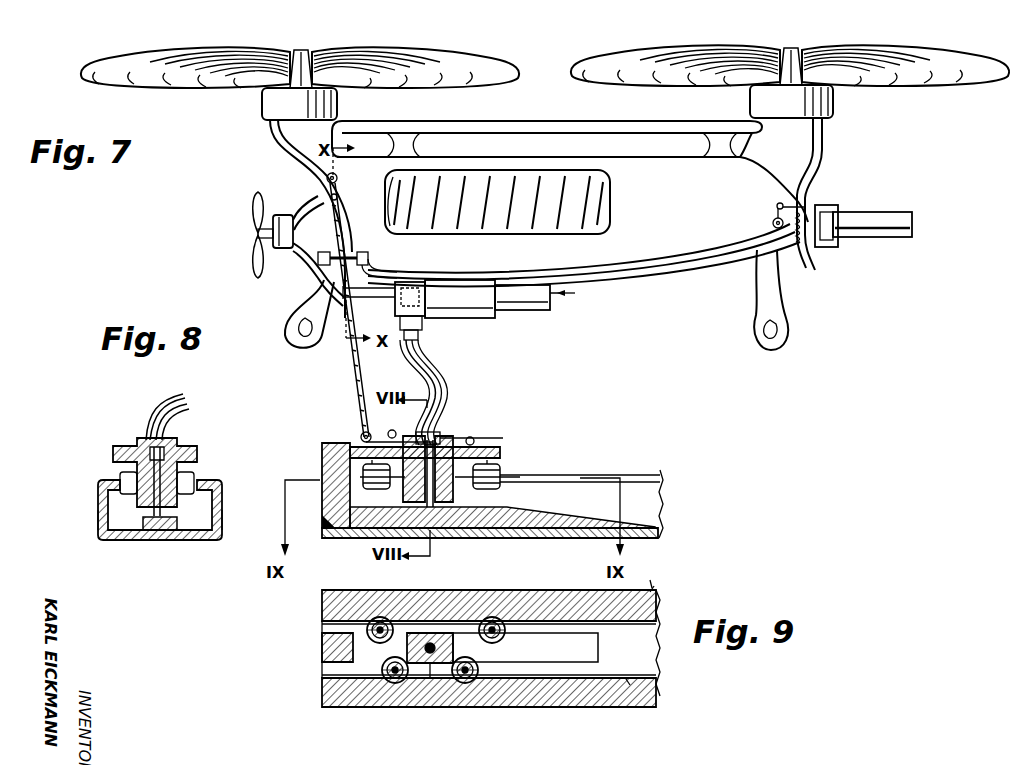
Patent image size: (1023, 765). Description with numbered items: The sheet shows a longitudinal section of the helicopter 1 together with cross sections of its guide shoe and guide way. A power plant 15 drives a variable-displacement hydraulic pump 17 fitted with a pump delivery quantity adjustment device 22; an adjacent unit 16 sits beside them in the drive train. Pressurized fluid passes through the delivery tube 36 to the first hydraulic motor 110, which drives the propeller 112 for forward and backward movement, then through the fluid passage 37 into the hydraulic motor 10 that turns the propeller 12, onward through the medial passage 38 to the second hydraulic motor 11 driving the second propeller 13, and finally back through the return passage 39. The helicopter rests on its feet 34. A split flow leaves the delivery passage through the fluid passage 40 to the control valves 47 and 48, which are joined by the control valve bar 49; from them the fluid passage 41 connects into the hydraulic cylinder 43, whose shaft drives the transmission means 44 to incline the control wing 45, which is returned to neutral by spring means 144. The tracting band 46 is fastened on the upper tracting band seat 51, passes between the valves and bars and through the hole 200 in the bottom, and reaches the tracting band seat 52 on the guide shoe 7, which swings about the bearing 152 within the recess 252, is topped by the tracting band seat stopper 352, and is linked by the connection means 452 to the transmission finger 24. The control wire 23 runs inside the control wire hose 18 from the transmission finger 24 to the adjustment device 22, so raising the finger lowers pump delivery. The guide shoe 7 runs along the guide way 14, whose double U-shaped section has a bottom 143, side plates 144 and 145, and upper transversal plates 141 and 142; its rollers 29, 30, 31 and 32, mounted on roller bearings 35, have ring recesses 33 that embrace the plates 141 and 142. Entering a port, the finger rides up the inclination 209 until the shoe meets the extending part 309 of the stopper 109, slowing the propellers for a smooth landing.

In FIG. 7, the helicopter 1 is at (648, 190).
In FIG. 7, the guide shoe 7 is at (480, 447).
In FIG. 8, the guide shoe 7 is at (197, 452).
In FIG. 9, the guide shoe 7 is at (440, 630).
In FIG. 7, the hydraulic motor 10 is at (264, 103).
In FIG. 7, the second hydraulic motor 11 is at (758, 101).
In FIG. 7, the propeller 12 is at (445, 73).
In FIG. 7, the second propeller 13 is at (630, 78).
In FIG. 7, the guide way 14 is at (648, 470).
In FIG. 8, the guide way 14 is at (222, 500).
In FIG. 9, the guide way 14 is at (328, 606).
In FIG. 7, the power plant 15 is at (480, 292).
In FIG. 7, the pump 16 is at (537, 290).
In FIG. 7, the hydraulic pump 17 is at (410, 293).
In FIG. 7, the control wire hose 18 is at (450, 392).
In FIG. 8, the control wire hose 18 is at (149, 418).
In FIG. 7, the pump delivery quantity adjustment device 22 is at (420, 340).
In FIG. 7, the control wire 23 is at (446, 375).
In FIG. 8, the control wire 23 is at (170, 398).
In FIG. 7, the transmission finger 24 is at (436, 500).
In FIG. 8, the transmission finger 24 is at (150, 497).
In FIG. 9, the transmission finger 24 is at (432, 680).
In FIG. 9, the guide shoe roller 29 is at (370, 620).
In FIG. 9, the guide shoe roller 30 is at (503, 637).
In FIG. 9, the guide shoe roller 31 is at (388, 680).
In FIG. 9, the guide shoe roller 32 is at (475, 680).
In FIG. 7, the ring recess 33 is at (358, 476).
In FIG. 9, the ring recess 33 is at (368, 630).
In FIG. 7, the helicopter feet 34 is at (284, 338).
In FIG. 7, the guide shoe roller bearing 35 is at (492, 466).
In FIG. 9, the guide shoe roller bearing 35 is at (383, 625).
In FIG. 7, the delivery tube 36 is at (316, 287).
In FIG. 7, the fluid passage 37 is at (270, 145).
In FIG. 7, the medial passage 38 is at (545, 121).
In FIG. 7, the return passage 39 is at (803, 176).
In FIG. 7, the fluid passage 40 is at (298, 268).
In FIG. 7, the fluid passage 41 is at (612, 278).
In FIG. 7, the hydraulic cylinder 43 is at (772, 222).
In FIG. 7, the transmission means 44 is at (826, 204).
In FIG. 7, the control wing 45 is at (900, 212).
In FIG. 7, the tracting band 46 is at (358, 361).
In FIG. 7, the control valve 47 is at (321, 254).
In FIG. 7, the control valve 48 is at (369, 258).
In FIG. 7, the control valve bar 49 is at (345, 258).
In FIG. 7, the tracting band seat 51 is at (338, 182).
In FIG. 7, the tracting band seat 52 is at (361, 434).
In FIG. 7, the stopper 109 is at (330, 530).
In FIG. 9, the stopper 109 is at (322, 646).
In FIG. 7, the first hydraulic motor 110 is at (281, 214).
In FIG. 7, the propeller 112 is at (254, 213).
In FIG. 8, the guide way transversal plate 141 is at (108, 480).
In FIG. 9, the guide way transversal plate 141 is at (645, 700).
In FIG. 7, the guide way transversal plate 142 is at (667, 575).
In FIG. 8, the guide way transversal plate 142 is at (216, 478).
In FIG. 9, the guide way transversal plate 142 is at (662, 586).
In FIG. 8, the bottom 143 is at (196, 542).
In FIG. 7, the guide way side plate 144 is at (800, 242).
In FIG. 8, the guide way side plate 144 is at (98, 524).
In FIG. 8, the guide way side plate 145 is at (222, 522).
In FIG. 7, the bearing 152 is at (475, 440).
In FIG. 7, the hole 200 is at (360, 300).
In FIG. 7, the inclination 209 is at (554, 500).
In FIG. 8, the inclination 209 is at (158, 540).
In FIG. 9, the inclination 209 is at (590, 650).
In FIG. 7, the recess 252 is at (397, 432).
In FIG. 7, the extending part 309 is at (322, 443).
In FIG. 7, the tracting band seat stopper 352 is at (397, 425).
In FIG. 7, the connection means 452 is at (440, 436).